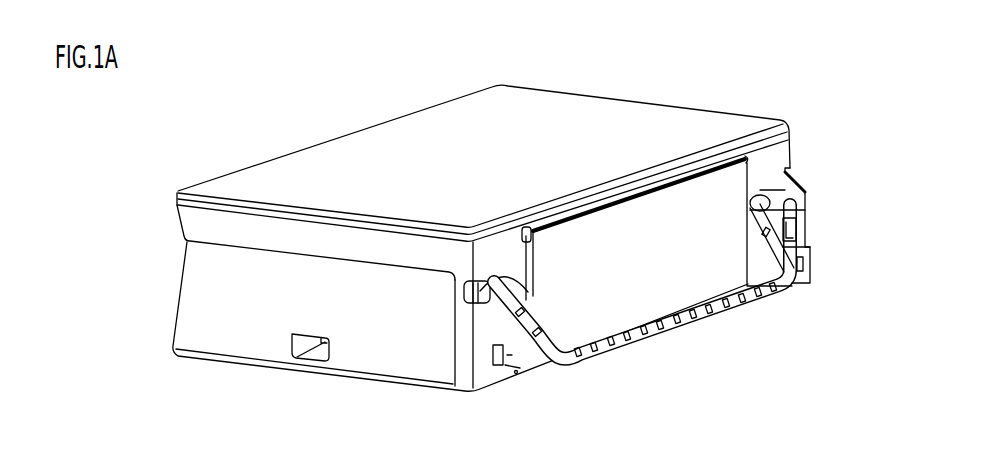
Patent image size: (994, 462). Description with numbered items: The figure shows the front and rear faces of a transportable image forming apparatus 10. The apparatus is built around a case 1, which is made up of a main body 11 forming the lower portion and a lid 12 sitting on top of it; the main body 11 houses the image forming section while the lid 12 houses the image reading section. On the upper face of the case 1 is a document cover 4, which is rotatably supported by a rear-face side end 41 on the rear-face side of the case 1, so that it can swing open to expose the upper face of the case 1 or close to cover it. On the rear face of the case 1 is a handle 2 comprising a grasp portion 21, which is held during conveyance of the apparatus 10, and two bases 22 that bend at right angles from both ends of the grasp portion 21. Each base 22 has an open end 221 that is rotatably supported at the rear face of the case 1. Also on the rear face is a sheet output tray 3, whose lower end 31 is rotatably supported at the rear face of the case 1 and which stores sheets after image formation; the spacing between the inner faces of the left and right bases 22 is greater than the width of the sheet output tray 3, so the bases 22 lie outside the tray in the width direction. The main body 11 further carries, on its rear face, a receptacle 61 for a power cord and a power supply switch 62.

The transportable image forming apparatus 10 is at (692, 47).
The case 1 is at (100, 171).
The main body 11 is at (200, 288).
The lid 12 is at (187, 222).
The document cover 4 is at (607, 118).
The rear-face side end 41 is at (728, 150).
The handle 2 is at (768, 372).
The grasp portion 21 is at (667, 322).
The bases 22 is at (604, 348).
The open end 221 is at (500, 286).
The sheet output tray 3 is at (728, 190).
The lower end 31 is at (522, 376).
The receptacle 61 is at (808, 262).
The power supply switch 62 is at (797, 230).